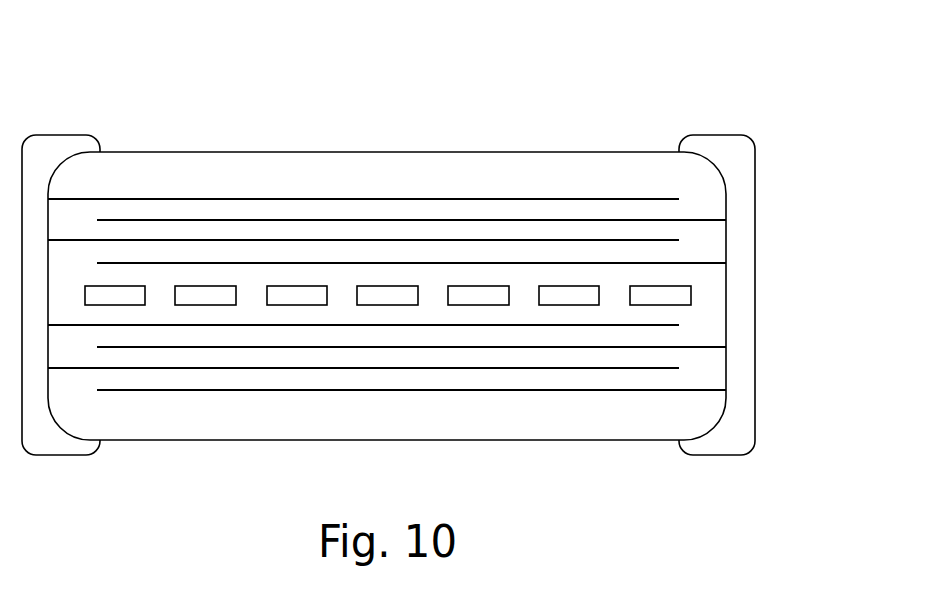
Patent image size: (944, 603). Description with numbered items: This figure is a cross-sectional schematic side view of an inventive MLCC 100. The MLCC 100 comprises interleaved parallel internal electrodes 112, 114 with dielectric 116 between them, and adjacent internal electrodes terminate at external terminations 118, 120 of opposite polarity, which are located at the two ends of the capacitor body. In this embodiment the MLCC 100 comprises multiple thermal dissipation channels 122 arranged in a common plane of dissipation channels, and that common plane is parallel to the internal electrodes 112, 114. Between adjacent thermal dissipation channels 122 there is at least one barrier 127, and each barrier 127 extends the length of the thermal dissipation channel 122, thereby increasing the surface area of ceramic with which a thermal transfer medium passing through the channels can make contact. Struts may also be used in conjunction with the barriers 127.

The MLCC 100 is at (657, 91).
The internal electrode 112 is at (428, 238).
The internal electrode 114 is at (445, 263).
The dielectric 116 is at (223, 232).
The external termination 118 is at (52, 438).
The external termination 120 is at (727, 442).
The thermal dissipation channel 122 is at (298, 296).
The barrier 127 is at (160, 296).